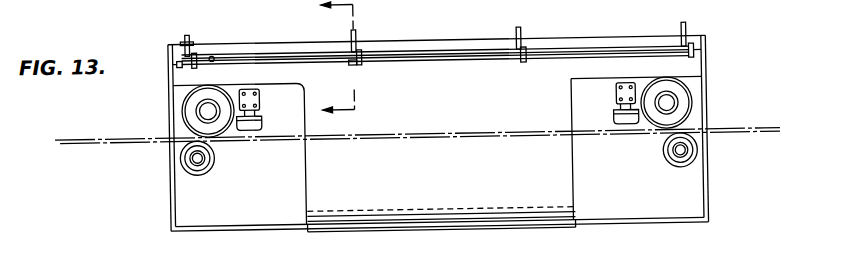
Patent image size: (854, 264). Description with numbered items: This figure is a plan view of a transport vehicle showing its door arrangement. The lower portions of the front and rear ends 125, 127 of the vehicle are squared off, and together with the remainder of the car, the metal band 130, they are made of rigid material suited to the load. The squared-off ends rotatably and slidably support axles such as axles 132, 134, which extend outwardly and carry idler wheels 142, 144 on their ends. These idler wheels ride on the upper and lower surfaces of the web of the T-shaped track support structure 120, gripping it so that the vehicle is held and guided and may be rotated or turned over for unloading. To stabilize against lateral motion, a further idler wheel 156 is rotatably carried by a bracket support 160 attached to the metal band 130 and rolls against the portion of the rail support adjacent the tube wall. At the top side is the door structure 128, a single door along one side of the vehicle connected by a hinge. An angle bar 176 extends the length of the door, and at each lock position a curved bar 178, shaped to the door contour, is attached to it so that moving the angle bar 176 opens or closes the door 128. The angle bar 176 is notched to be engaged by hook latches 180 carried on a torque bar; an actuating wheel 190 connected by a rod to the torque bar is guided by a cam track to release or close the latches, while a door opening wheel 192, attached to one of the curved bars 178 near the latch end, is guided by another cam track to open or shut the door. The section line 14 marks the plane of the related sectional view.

The section line 14— 14 is at (358, 64).
The track support structure 120 is at (123, 138).
The front end 125 is at (173, 188).
The rear end 127 is at (707, 182).
The door structure 128 is at (436, 39).
The metal band 130 is at (453, 224).
The axle 132 is at (192, 154).
The axle 134 is at (207, 108).
The idler wheel 142 is at (214, 158).
The idler wheel 144 is at (185, 96).
The idler wheel 156 is at (260, 122).
The bracket support 160 is at (249, 90).
The angle bar 176 is at (253, 52).
The curved bar 178 is at (522, 28).
The hook latch 180 is at (528, 51).
The actuating wheel 190 is at (214, 53).
The door opening wheel 192 is at (189, 32).